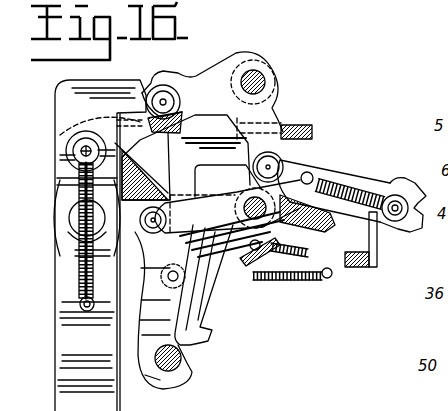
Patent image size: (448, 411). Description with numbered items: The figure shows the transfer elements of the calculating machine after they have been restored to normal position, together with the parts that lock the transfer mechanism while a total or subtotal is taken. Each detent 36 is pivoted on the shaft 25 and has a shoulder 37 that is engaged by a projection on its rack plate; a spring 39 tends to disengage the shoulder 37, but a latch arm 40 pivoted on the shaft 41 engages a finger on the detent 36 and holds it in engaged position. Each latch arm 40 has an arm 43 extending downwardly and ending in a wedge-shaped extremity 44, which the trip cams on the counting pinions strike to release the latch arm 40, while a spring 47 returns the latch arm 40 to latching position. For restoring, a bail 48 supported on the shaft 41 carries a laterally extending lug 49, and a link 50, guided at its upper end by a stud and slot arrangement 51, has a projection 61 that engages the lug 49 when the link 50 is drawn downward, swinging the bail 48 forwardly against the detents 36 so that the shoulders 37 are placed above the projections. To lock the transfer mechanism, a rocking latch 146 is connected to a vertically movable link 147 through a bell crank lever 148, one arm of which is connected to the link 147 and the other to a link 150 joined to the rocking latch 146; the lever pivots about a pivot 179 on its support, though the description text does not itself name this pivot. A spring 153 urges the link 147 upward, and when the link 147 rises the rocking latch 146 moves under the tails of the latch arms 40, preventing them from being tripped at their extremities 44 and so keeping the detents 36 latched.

The shaft 25 is at (182, 358).
The detent 36 is at (212, 312).
The shoulder 37 is at (186, 142).
The spring 39 is at (318, 278).
The latch arm 40 is at (226, 192).
The shaft 41 is at (316, 167).
The arm 43 is at (250, 292).
The wedge-shaped extremity 44 is at (210, 333).
The spring 47 is at (305, 255).
The bail 48 is at (292, 128).
The lug 49 is at (145, 232).
The link 50 is at (57, 200).
The stud and slot arrangement 51 is at (66, 148).
The projection 61 is at (120, 192).
The rocking latch 146 is at (386, 239).
The link 147 is at (72, 396).
The bell crank lever 148 is at (203, 78).
The link 150 is at (347, 184).
The spring 153 is at (78, 283).
The pivot pin 179 is at (258, 80).